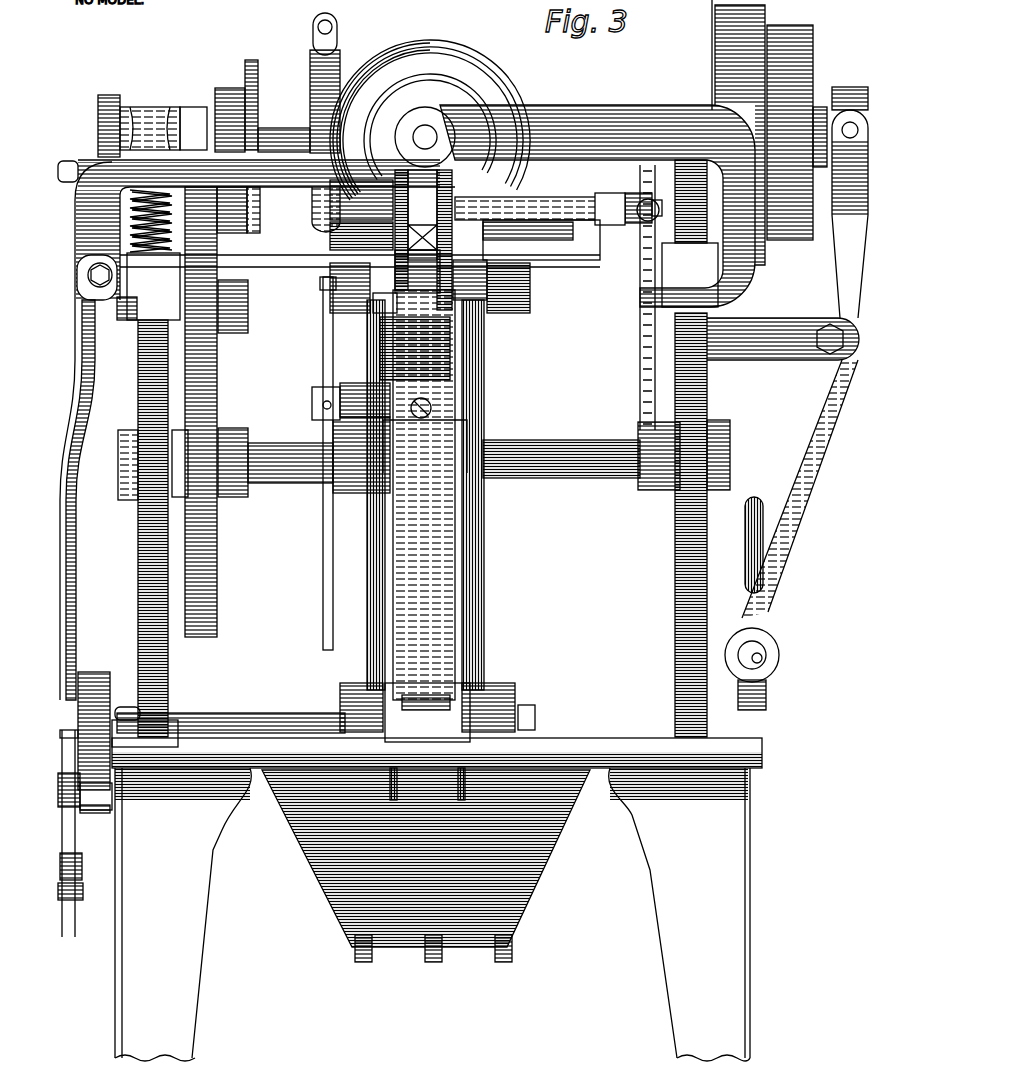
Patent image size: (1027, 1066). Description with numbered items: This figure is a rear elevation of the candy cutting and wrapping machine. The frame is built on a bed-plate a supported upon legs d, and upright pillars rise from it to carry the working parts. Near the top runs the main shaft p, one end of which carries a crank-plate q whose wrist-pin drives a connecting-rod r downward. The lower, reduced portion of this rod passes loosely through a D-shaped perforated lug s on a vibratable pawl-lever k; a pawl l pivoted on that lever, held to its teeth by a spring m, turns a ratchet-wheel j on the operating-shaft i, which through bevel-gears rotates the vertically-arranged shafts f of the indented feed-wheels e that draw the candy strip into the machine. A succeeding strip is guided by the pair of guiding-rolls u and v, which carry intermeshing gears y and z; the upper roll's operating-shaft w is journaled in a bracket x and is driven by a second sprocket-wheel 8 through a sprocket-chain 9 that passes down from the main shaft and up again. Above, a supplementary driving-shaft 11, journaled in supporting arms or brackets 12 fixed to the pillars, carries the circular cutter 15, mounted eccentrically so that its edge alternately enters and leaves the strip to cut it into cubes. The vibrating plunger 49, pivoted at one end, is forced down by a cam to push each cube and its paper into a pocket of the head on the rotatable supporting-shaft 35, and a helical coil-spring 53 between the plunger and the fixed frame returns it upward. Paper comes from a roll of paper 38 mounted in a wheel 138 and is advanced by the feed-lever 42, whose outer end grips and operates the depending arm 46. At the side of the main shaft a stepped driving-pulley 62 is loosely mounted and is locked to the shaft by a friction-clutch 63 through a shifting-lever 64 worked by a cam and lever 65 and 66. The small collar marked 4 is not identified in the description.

The crank-plate q is at (113, 97).
The main shaft p is at (277, 130).
The vibrating plunger 49 is at (256, 229).
The helical coil-spring 53 is at (133, 213).
The indented feed-wheels e is at (330, 233).
The circular cutter 15 is at (457, 47).
The supplementary driving-shaft 11 is at (418, 133).
The supporting arms or brackets 12 is at (578, 108).
The guiding-roll u is at (400, 205).
The gear y is at (450, 197).
The operating-shaft w is at (545, 203).
The bracket x is at (582, 233).
The second sprocket-wheel 8 is at (645, 225).
The stepped driving-pulley 62 is at (769, 132).
The friction-clutch 63 is at (842, 100).
The guiding-roll v is at (417, 290).
The gear z is at (473, 327).
The sprocket-chain 9 is at (638, 352).
The rotatable supporting-shaft 35 is at (548, 440).
The feed-lever 42 is at (347, 437).
The depending arm 46 is at (323, 567).
The vertically-arranged shafts f is at (377, 588).
The connecting-rod r is at (80, 562).
The ratchet-wheel j is at (85, 680).
The operating-shaft i is at (217, 723).
The pawl l is at (93, 795).
The pawl-lever k is at (113, 810).
The spring m is at (112, 835).
The D-shaped perforated lug s is at (90, 810).
The collar 4 is at (80, 872).
The legs d is at (432, 914).
The bed-plate a is at (437, 731).
The roll of paper 38 is at (427, 712).
The wheel 138 is at (520, 690).
The shifting-lever 64 is at (815, 447).
The lever 66 is at (765, 540).
The cam 65 is at (778, 678).